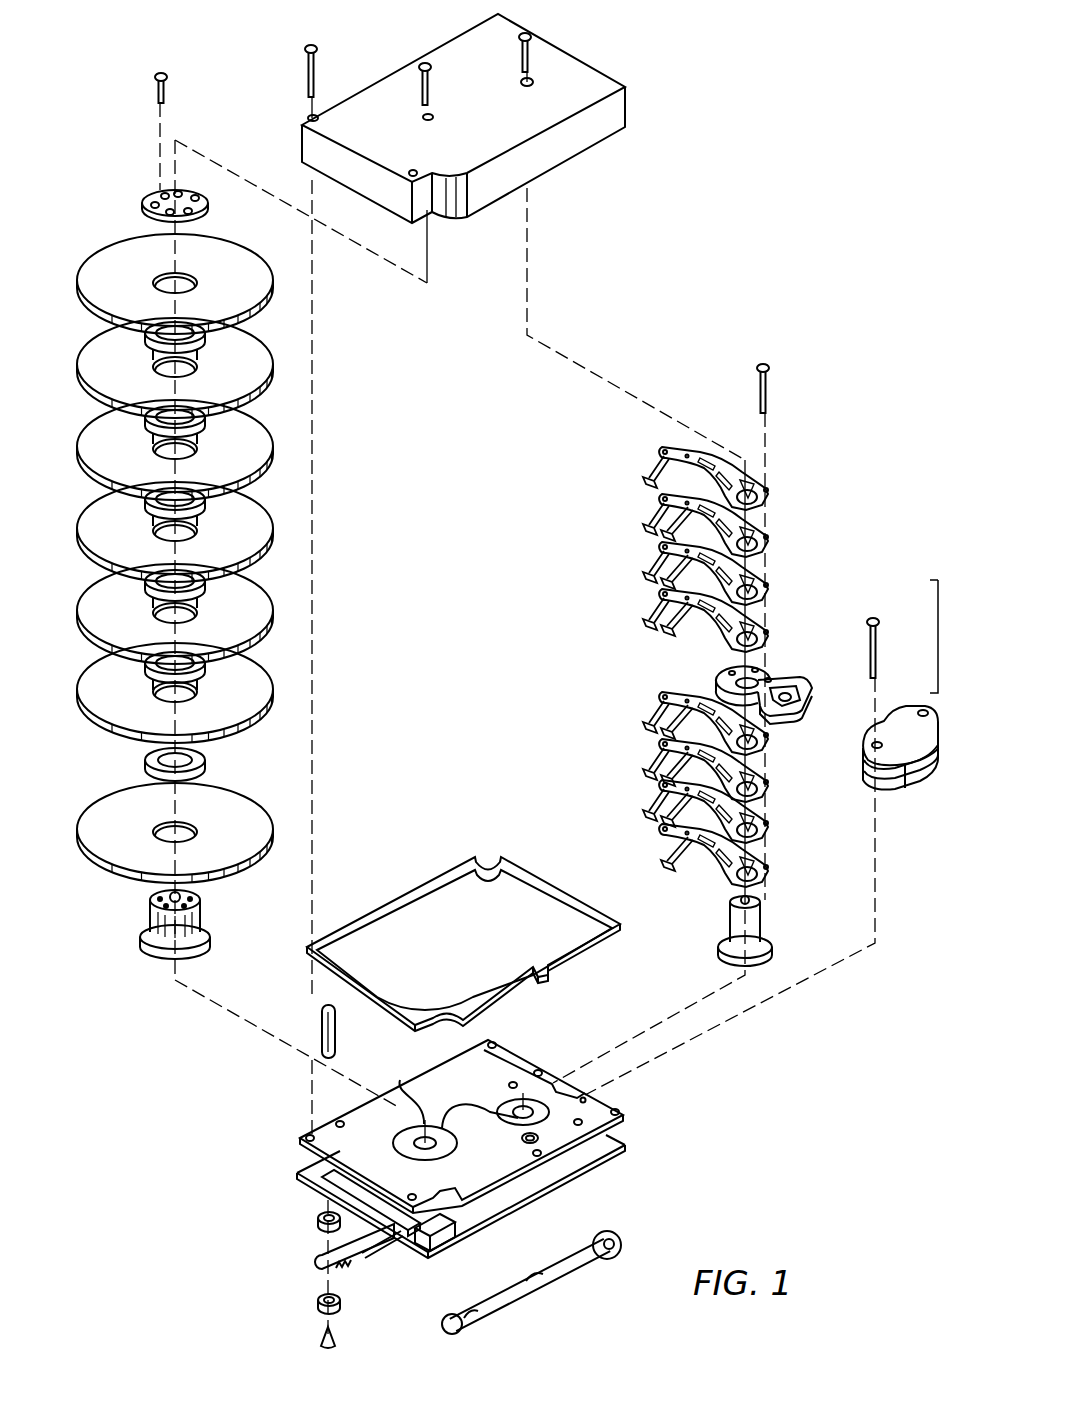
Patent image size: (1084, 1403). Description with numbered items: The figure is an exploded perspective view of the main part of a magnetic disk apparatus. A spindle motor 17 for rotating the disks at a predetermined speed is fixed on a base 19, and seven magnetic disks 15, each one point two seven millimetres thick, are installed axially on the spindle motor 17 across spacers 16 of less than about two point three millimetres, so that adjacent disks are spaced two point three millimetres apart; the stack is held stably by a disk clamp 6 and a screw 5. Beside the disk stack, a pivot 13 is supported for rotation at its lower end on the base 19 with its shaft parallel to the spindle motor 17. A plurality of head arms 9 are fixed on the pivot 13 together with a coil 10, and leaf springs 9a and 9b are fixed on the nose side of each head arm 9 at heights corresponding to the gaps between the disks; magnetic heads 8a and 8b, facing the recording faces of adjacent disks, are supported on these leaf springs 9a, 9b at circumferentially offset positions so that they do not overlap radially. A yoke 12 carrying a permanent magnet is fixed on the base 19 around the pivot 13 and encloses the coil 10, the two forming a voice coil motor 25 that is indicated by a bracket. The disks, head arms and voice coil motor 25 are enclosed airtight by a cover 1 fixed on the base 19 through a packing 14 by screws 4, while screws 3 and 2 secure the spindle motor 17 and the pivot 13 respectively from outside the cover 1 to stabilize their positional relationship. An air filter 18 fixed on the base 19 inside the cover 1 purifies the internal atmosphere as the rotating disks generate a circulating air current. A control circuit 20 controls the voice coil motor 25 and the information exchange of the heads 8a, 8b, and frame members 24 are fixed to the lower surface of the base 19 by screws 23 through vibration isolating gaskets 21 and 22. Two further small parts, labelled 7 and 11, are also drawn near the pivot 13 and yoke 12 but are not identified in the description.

The cover 1 is at (615, 82).
The screw 2 is at (532, 60).
The screw 3 is at (433, 86).
The screw 4 is at (318, 54).
The screw 5 is at (153, 82).
The disk clamp 6 is at (150, 202).
The pivot screw 7 is at (770, 398).
The magnetic head 8a is at (642, 478).
The magnetic head 8b is at (660, 535).
The head arm 9 is at (768, 492).
The leaf spring 9a is at (662, 455).
The leaf spring 9b is at (674, 625).
The coil 10 is at (812, 700).
The screw 11 is at (868, 645).
The yoke 12 is at (912, 714).
The pivot 13 is at (738, 923).
The packing 14 is at (418, 892).
The magnetic disk 15 is at (262, 437).
The spacer 16 is at (222, 597).
The spindle motor 17 is at (145, 925).
The air filter 18 is at (345, 1037).
The base 19 is at (622, 1118).
The control circuit 20 is at (560, 1172).
The vibration isolating gasket 21 is at (317, 1218).
The vibration isolating gasket 22 is at (317, 1300).
The screw 23 is at (320, 1336).
The frame member 24 is at (480, 1308).
The voice coil motor 25 is at (938, 580).